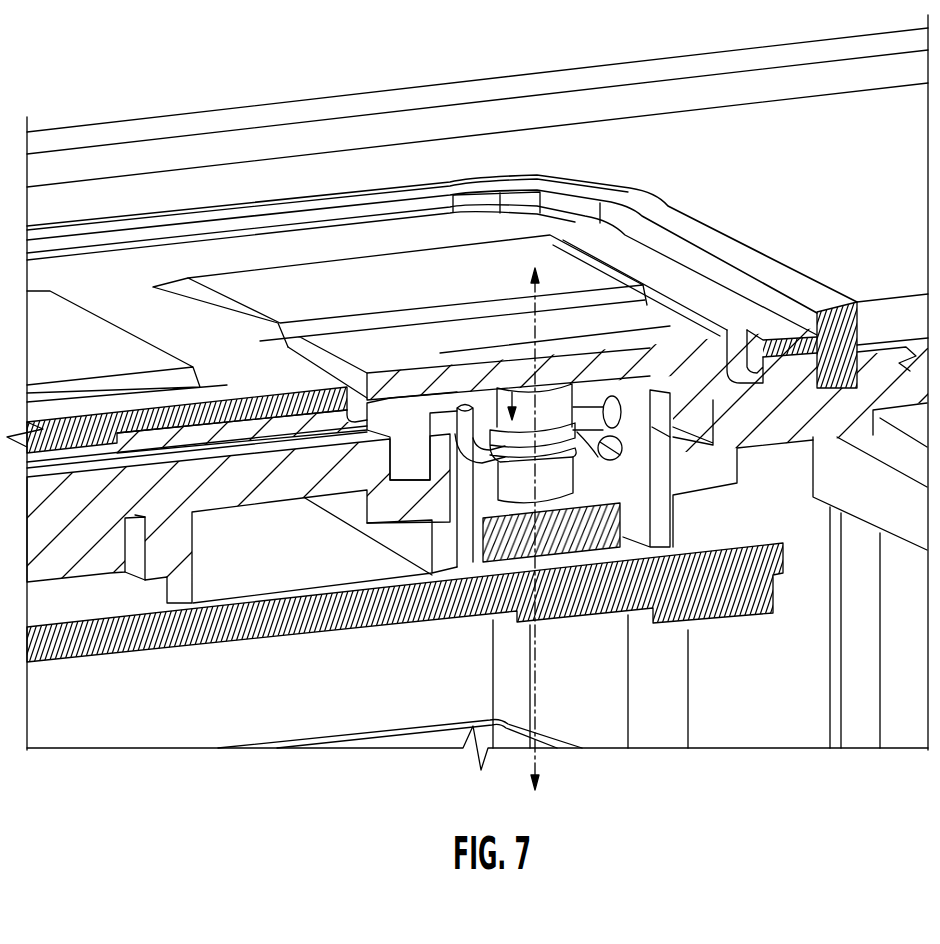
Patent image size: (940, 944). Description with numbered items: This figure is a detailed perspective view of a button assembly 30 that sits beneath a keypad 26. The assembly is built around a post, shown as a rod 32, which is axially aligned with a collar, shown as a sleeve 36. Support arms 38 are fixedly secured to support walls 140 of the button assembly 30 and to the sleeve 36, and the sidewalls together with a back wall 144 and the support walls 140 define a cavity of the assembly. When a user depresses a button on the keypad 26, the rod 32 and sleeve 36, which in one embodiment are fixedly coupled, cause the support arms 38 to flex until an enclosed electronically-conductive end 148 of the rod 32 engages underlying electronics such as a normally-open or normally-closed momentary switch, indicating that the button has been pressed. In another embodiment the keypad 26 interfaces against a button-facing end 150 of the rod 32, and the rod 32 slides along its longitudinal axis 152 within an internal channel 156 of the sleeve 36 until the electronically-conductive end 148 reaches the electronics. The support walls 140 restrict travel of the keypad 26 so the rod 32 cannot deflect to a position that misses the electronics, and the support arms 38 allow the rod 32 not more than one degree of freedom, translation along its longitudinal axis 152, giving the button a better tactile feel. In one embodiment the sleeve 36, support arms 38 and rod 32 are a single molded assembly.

The keypad 26 is at (372, 353).
The button assembly 30 is at (508, 385).
The rod 32 is at (541, 488).
The sleeve 36 is at (583, 492).
The support arms 38 is at (487, 452).
The support walls 140 is at (628, 430).
The back wall 144 is at (575, 483).
The enclosed electronically-conductive end 148 is at (517, 500).
The button-facing end 150 is at (526, 390).
The longitudinal axis 152 is at (535, 758).
The internal channel 156 is at (560, 437).